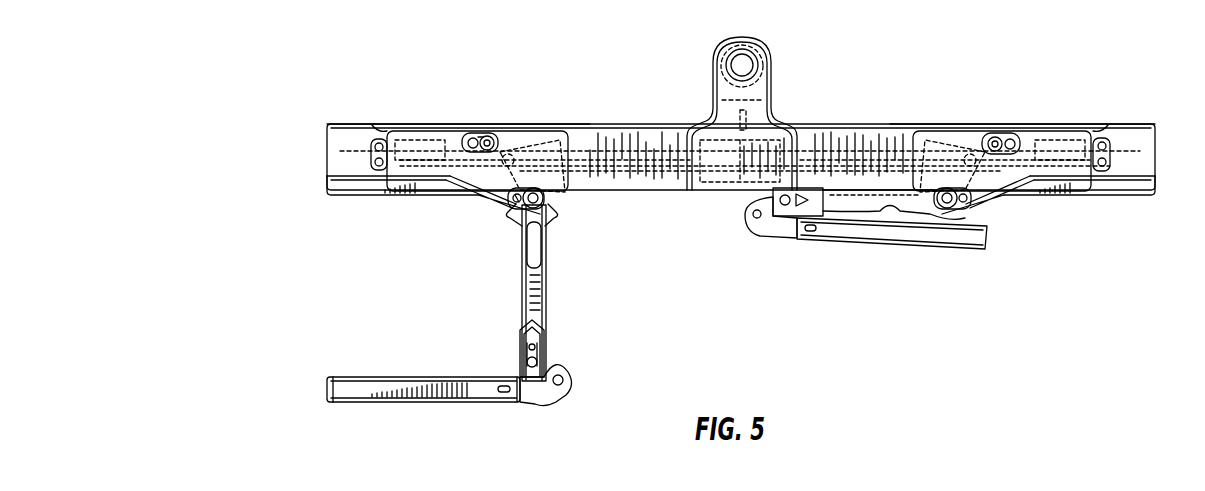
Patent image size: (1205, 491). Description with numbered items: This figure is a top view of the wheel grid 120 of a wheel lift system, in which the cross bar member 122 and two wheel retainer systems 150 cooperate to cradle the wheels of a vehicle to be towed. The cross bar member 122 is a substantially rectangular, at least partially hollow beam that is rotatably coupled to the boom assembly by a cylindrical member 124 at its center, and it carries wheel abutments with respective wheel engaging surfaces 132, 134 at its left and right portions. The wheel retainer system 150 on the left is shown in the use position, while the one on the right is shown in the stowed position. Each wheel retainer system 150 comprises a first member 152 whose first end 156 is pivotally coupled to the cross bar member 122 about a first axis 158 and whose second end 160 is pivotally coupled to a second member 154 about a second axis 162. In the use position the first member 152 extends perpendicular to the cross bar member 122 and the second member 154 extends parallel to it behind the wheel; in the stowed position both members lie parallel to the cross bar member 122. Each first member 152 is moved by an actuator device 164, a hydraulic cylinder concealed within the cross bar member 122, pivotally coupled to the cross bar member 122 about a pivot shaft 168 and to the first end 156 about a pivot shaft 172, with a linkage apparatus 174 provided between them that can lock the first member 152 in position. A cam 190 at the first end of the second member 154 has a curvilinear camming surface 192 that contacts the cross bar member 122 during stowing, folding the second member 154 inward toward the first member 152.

The wheel grid 120 is at (1086, 84).
The cross bar member 122 is at (665, 130).
The cylindrical member 124 is at (745, 65).
The wheel engaging surface 132 is at (392, 124).
The wheel engaging surface 134 is at (1040, 124).
The wheel retainer system 150 is at (582, 268).
The first member 152 is at (548, 272).
The second member 154 is at (436, 404).
The first end 156 is at (518, 234).
The first axis 158 is at (521, 196).
The second end 160 is at (520, 345).
The second axis 162 is at (534, 350).
The actuator device 164 is at (412, 148).
The pivot shaft 168 is at (376, 162).
The pivot shaft 172 is at (508, 158).
The linkage apparatus 174 is at (962, 182).
The cam 190 is at (556, 396).
The camming surface 192 is at (560, 360).